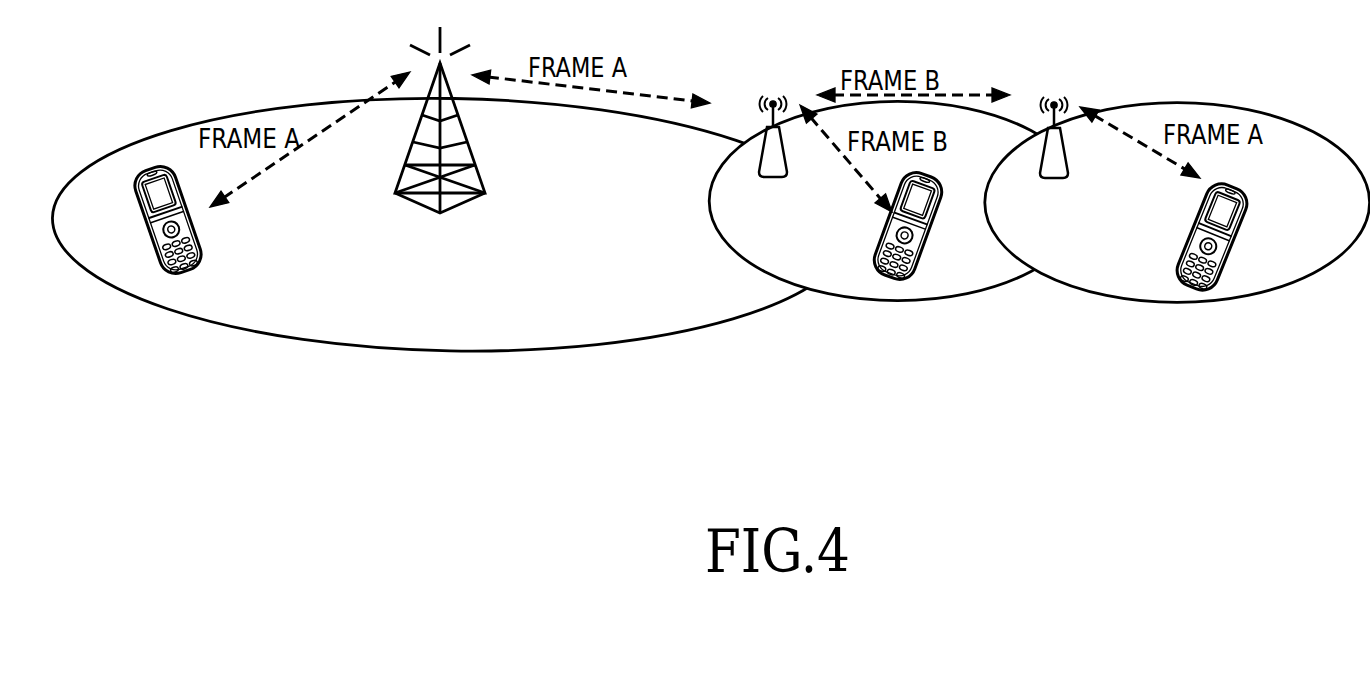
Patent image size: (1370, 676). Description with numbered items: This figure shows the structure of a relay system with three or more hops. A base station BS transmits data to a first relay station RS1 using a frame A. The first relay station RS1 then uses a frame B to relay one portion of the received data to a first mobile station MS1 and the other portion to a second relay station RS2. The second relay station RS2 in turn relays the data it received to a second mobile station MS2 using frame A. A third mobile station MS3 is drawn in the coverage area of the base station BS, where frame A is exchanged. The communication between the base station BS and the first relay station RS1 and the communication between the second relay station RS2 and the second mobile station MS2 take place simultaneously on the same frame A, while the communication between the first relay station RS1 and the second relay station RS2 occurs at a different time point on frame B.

The base station BS is at (440, 140).
The first relay station RS1 is at (779, 154).
The second relay station RS2 is at (1054, 155).
The first mobile station MS1 is at (926, 226).
The second mobile station MS2 is at (1231, 237).
The third mobile station MS3 is at (186, 234).